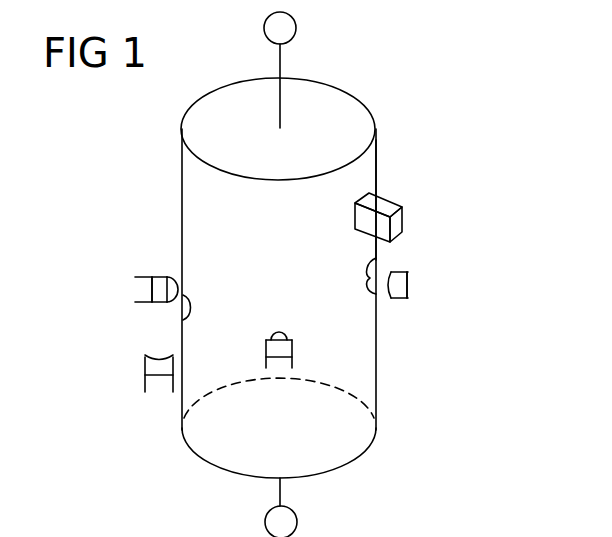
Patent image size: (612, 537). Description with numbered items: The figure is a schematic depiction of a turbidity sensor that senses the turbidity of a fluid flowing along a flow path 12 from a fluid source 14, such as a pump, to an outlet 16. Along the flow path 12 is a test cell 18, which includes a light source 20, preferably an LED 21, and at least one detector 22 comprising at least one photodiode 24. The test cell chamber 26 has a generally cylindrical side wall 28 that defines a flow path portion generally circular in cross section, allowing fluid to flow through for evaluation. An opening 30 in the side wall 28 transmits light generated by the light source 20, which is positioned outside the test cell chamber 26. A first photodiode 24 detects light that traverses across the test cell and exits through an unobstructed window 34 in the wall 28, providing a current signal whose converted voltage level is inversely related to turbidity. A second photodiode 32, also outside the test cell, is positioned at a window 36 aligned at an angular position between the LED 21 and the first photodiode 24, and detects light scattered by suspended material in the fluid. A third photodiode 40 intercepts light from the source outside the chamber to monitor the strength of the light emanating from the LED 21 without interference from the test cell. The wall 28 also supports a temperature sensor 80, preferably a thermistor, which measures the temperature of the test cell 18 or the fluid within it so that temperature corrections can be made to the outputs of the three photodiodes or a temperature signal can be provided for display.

The flow path 12 is at (270, 99).
The fluid source 14 is at (266, 528).
The outlet 16 is at (297, 36).
The test cell 18 is at (388, 134).
The light source 20 is at (152, 258).
The LED 21 is at (152, 288).
The detector 22 is at (428, 263).
The first photodiode 24 is at (407, 298).
The test cell chamber 26 is at (365, 112).
The cylindrical side wall 28 is at (378, 381).
The opening 30 is at (186, 310).
The second photodiode 32 is at (293, 343).
The window 34 is at (378, 262).
The window 36 is at (286, 334).
The third photodiode 40 is at (145, 367).
The temperature sensor 80 is at (398, 204).